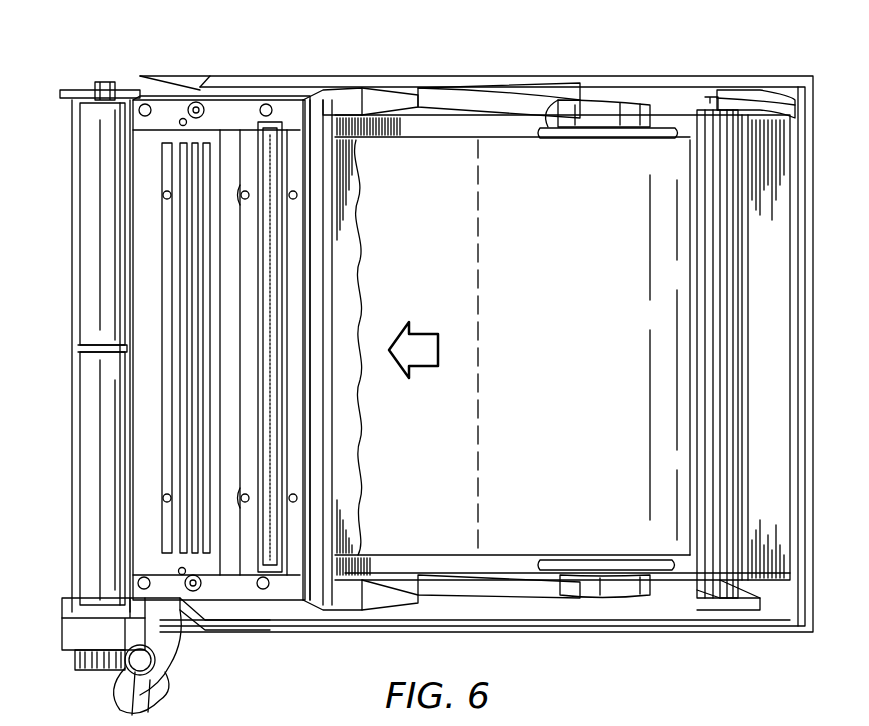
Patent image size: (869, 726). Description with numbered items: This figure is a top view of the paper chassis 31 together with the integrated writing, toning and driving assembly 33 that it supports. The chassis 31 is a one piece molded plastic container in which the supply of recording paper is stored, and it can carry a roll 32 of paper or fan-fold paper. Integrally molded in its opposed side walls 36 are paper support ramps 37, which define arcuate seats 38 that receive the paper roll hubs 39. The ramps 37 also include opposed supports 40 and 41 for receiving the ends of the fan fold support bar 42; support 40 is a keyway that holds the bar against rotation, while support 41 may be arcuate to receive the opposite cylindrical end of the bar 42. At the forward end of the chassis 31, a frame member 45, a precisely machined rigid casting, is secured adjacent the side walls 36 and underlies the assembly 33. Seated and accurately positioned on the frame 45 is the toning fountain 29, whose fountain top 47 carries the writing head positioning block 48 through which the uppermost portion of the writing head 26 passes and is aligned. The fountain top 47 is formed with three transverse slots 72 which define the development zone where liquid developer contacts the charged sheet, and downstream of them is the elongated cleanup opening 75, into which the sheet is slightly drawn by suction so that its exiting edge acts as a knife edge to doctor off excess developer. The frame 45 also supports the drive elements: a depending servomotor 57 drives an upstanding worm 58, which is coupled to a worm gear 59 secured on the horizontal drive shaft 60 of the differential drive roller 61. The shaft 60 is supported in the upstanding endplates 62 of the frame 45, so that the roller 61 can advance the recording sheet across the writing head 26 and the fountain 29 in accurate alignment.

The writing head 26 is at (258, 140).
The toning fountain 29 is at (192, 145).
The support chassis 31 is at (806, 366).
The roll of paper 32 is at (672, 155).
The writing, toning and driving assembly 33 is at (147, 62).
The side walls 36 is at (380, 95).
The paper support ramps 37 is at (510, 108).
The arcuate seats 38 is at (555, 128).
The paper roll hubs 39 is at (610, 108).
The support 40 is at (728, 102).
The support 41 is at (708, 600).
The fan fold support bar 42 is at (722, 243).
The frame member 45 is at (172, 635).
The fountain top 47 is at (215, 553).
The writing head positioning block 48 is at (282, 142).
The servomotor 57 is at (130, 690).
The worm 58 is at (172, 680).
The worm gear 59 is at (76, 664).
The drive shaft 60 is at (92, 86).
The differential drive roller 61 is at (95, 240).
The endplates 62 is at (62, 100).
The slots 72 is at (183, 318).
The cleanup opening 75 is at (162, 420).